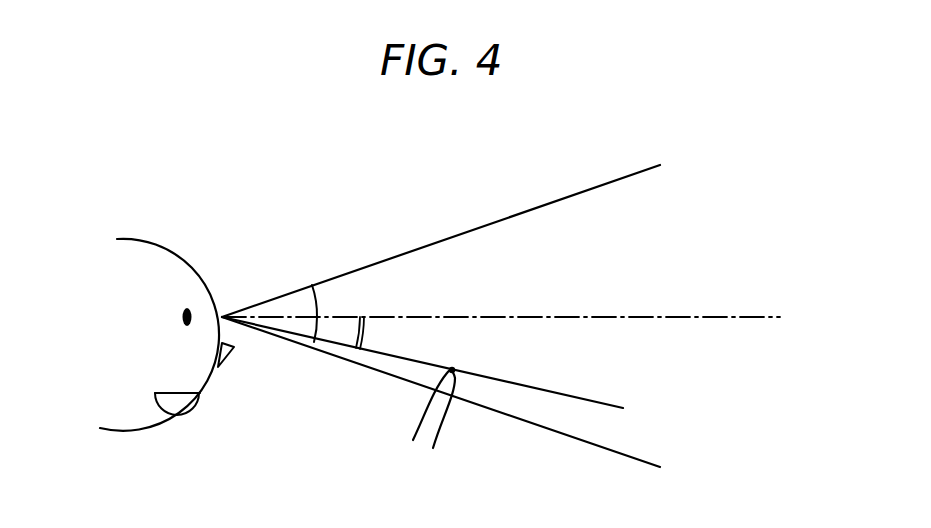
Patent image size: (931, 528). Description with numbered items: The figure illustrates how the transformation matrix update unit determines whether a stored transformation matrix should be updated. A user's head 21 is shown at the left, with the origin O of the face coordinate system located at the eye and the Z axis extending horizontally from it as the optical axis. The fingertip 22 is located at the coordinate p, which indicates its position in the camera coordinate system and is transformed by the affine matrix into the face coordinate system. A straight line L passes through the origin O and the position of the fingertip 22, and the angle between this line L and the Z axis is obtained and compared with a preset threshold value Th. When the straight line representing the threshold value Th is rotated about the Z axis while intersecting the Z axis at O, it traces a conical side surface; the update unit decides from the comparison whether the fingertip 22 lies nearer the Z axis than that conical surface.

The user's head (viewer) 21 is at (140, 248).
The fingertip 22 is at (455, 370).
The origin O is at (223, 308).
The Z axis Z is at (749, 315).
The straight line L is at (602, 398).
The threshold value Th is at (320, 285).
The coordinate p is at (452, 370).